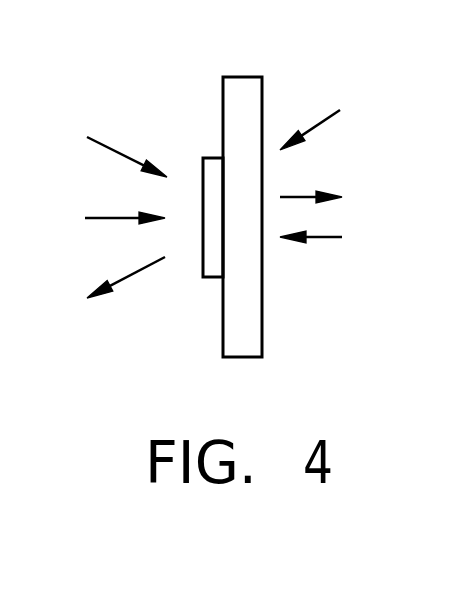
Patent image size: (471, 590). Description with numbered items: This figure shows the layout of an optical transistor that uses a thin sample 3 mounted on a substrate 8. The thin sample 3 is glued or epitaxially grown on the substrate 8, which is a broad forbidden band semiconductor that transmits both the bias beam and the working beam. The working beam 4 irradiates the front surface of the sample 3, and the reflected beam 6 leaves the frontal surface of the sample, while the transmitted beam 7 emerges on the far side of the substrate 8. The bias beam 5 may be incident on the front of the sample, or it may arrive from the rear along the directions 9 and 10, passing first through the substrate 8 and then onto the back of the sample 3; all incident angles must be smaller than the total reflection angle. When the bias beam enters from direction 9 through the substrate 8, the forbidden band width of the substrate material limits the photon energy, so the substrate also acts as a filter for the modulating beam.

The sample 3 is at (212, 165).
The working beam 4 is at (114, 148).
The bias beam 5 is at (113, 221).
The reflected beam 6 is at (112, 291).
The transmitted beam 7 is at (322, 198).
The substrate 8 is at (245, 102).
The rear incidence direction 9 is at (322, 239).
The rear incidence direction 10 is at (328, 121).